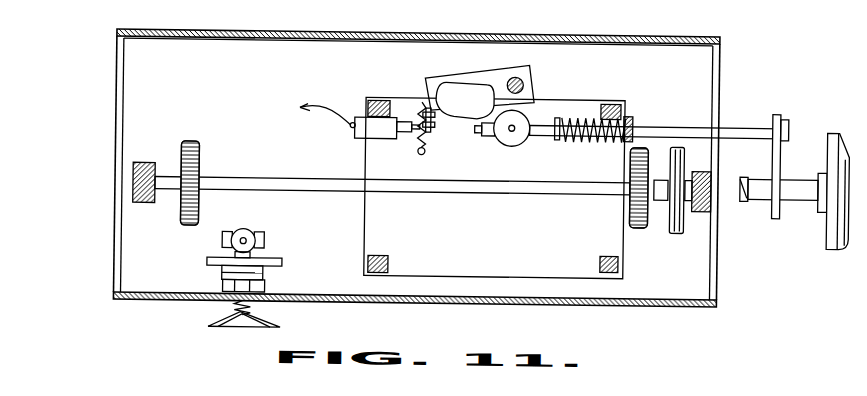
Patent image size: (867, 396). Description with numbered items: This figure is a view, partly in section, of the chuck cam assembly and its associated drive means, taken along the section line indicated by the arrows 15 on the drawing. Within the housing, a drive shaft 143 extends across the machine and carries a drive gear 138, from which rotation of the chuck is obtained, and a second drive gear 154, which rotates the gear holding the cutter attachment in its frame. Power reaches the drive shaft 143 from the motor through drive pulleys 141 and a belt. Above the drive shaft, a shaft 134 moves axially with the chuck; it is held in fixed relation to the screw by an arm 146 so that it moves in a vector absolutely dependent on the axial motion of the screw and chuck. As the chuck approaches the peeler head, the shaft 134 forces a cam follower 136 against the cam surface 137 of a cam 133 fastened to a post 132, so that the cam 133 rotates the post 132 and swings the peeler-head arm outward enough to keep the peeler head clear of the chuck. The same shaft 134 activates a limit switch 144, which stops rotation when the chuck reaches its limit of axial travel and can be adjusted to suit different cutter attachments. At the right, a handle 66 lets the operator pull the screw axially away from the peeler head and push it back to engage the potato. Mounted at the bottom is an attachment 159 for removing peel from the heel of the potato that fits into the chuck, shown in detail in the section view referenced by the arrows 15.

The section line 15- 15 is at (276, 296).
The handle 66 is at (832, 243).
The post 132 is at (526, 80).
The cam 133 is at (437, 76).
The shaft 134 is at (649, 119).
The cam follower 136 is at (523, 138).
The cam surface 137 is at (466, 116).
The drive gear 138 is at (642, 221).
The drive pulleys 141 is at (684, 224).
The drive shaft 143 is at (494, 189).
The limit switch 144 is at (358, 93).
The arm 146 is at (778, 148).
The drive gear 154 is at (201, 157).
The attachment 159 is at (278, 277).